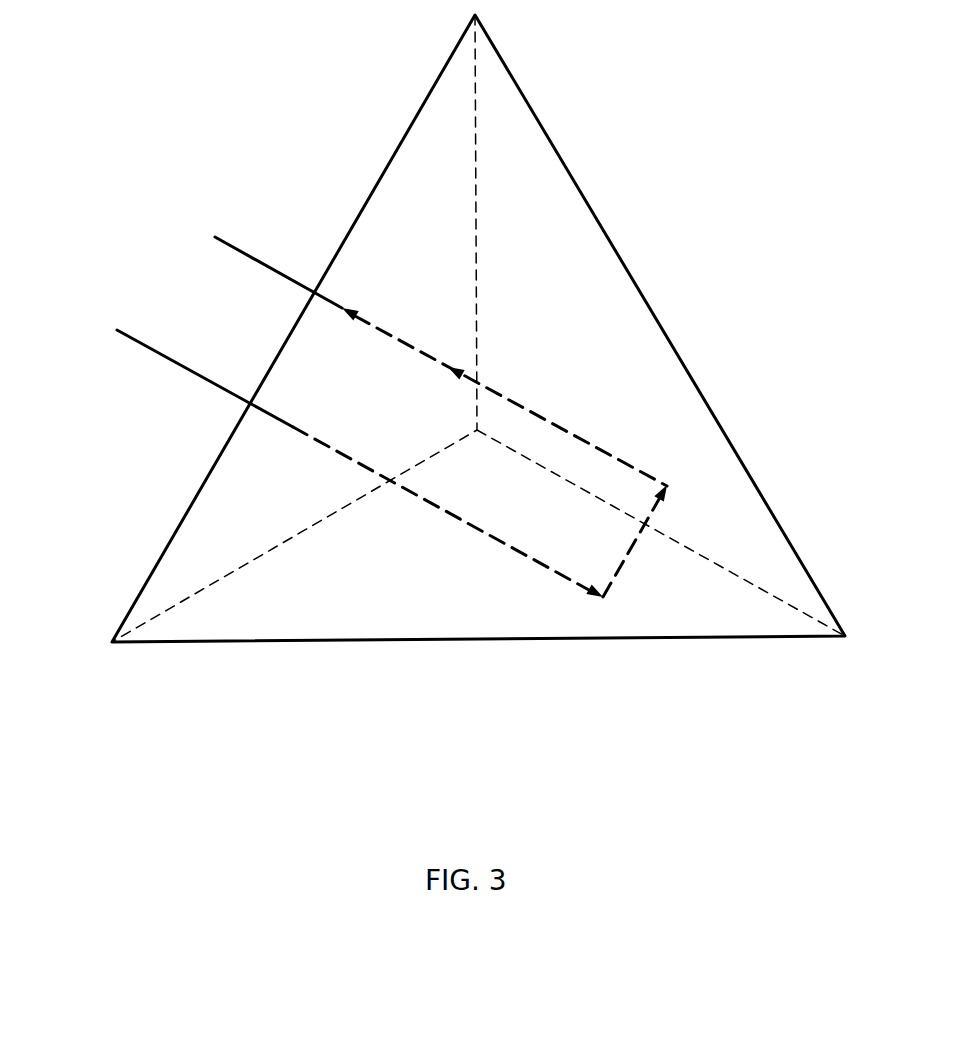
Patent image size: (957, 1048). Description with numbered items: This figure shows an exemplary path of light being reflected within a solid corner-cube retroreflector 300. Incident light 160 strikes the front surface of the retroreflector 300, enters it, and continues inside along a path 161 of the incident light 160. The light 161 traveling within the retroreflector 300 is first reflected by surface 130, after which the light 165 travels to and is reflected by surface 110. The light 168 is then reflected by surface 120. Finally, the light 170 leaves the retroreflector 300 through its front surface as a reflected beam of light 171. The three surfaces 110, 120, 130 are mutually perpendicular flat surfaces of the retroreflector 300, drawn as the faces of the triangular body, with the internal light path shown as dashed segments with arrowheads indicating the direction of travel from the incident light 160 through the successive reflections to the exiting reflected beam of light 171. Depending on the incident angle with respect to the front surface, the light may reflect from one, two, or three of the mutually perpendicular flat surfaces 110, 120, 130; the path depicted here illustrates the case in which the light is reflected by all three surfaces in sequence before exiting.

The surface 110 is at (478, 328).
The surface 120 is at (252, 328).
The surface 130 is at (480, 582).
The incident light 160 is at (142, 345).
The path of the incident light 161 is at (527, 552).
The light 165 is at (620, 563).
The light 168 is at (645, 383).
The light 170 is at (400, 339).
The reflected beam of light 171 is at (243, 253).
The solid retroreflector 300 is at (460, 409).